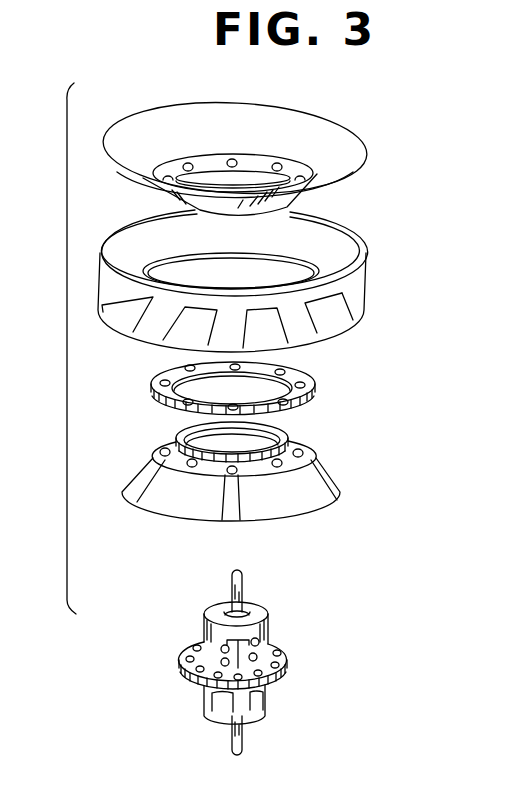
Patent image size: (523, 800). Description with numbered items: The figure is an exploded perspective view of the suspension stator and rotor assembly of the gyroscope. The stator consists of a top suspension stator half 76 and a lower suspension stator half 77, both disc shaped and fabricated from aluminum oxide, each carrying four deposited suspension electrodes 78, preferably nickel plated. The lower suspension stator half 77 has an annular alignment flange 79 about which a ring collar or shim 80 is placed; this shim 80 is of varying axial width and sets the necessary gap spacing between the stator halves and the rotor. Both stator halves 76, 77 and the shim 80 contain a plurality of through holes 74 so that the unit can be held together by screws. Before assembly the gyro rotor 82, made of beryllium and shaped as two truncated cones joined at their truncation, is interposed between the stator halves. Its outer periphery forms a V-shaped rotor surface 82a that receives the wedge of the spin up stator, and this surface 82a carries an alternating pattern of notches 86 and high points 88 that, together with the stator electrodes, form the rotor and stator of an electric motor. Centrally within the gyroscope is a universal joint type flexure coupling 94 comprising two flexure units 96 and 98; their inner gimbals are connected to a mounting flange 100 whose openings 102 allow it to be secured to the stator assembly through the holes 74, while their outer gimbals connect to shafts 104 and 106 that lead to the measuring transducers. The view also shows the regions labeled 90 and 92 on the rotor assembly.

The through holes 74 is at (357, 160).
The top suspension stator half 76 is at (323, 122).
The lower suspension stator half 77 is at (342, 478).
The suspension electrodes 78 is at (325, 508).
The annular alignment flange 79 is at (290, 432).
The ring collar or shim 80 is at (312, 393).
The gyro rotor 82 is at (369, 255).
The rotor surface 82a is at (348, 290).
The notches 86 is at (345, 322).
The high points 88 is at (362, 305).
The central opening 90 is at (320, 225).
The top surface of ring 92 is at (136, 228).
The universal joint type flexure coupling 94 is at (287, 670).
The flexure unit 96 is at (268, 625).
The flexure unit 98 is at (263, 713).
The mounting flange 100 is at (280, 652).
The openings 102 is at (262, 675).
The shaft 104 is at (244, 582).
The shaft 106 is at (243, 746).